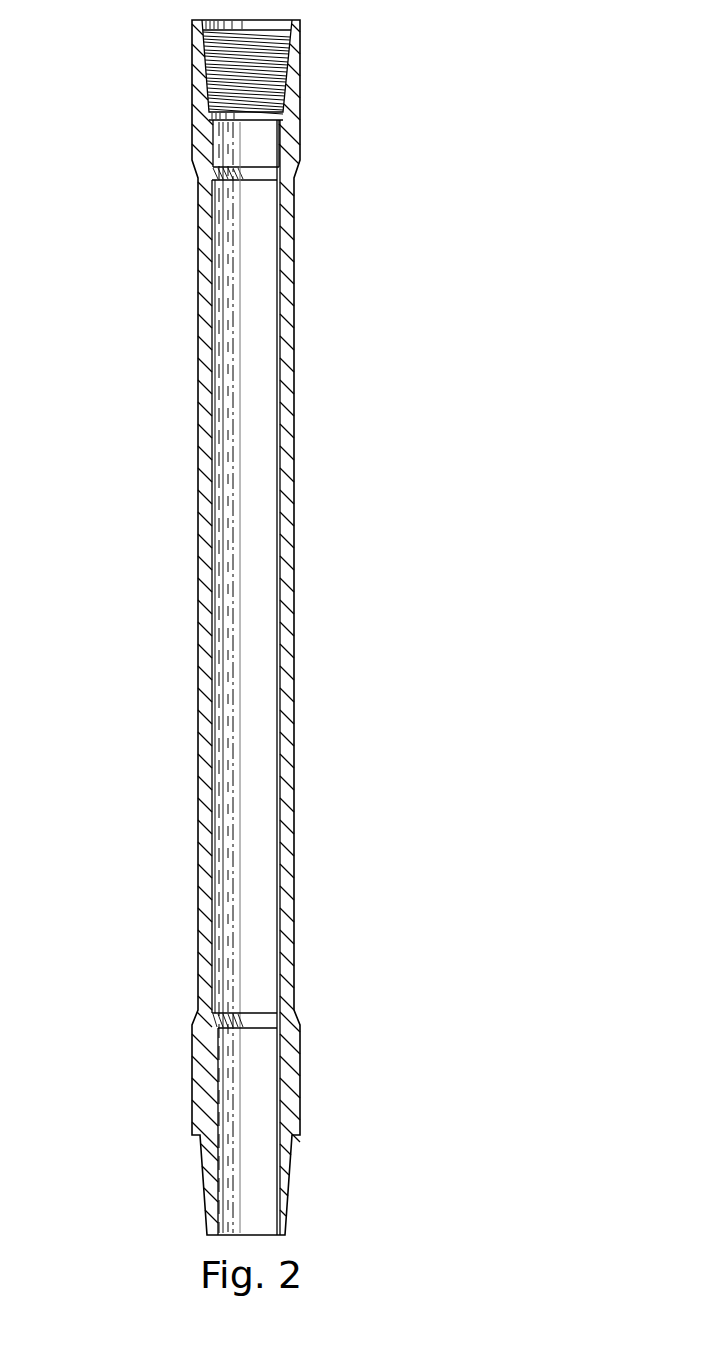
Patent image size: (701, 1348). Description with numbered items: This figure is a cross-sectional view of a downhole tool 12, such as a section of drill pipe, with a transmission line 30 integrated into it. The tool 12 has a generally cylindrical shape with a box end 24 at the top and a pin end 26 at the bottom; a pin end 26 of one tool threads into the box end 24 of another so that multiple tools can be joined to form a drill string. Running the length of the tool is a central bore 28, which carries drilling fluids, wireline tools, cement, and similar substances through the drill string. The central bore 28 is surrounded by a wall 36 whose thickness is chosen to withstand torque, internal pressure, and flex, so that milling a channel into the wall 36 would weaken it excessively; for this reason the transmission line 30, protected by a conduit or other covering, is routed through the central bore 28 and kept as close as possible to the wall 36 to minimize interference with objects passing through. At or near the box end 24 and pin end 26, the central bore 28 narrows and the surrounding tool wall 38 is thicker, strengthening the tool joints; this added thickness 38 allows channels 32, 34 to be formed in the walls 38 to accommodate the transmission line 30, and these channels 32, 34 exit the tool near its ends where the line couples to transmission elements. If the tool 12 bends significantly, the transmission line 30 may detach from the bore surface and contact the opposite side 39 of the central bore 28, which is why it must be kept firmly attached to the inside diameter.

The downhole tool 12 is at (466, 351).
The box end 24 is at (156, 115).
The pin end 26 is at (160, 1172).
The central bore 28 is at (218, 633).
The transmission line 30 is at (290, 592).
The channel 32 is at (283, 140).
The channel 34 is at (283, 1050).
The wall 36 is at (270, 445).
The tool wall 38 is at (277, 1087).
The opposite side 39 is at (212, 775).